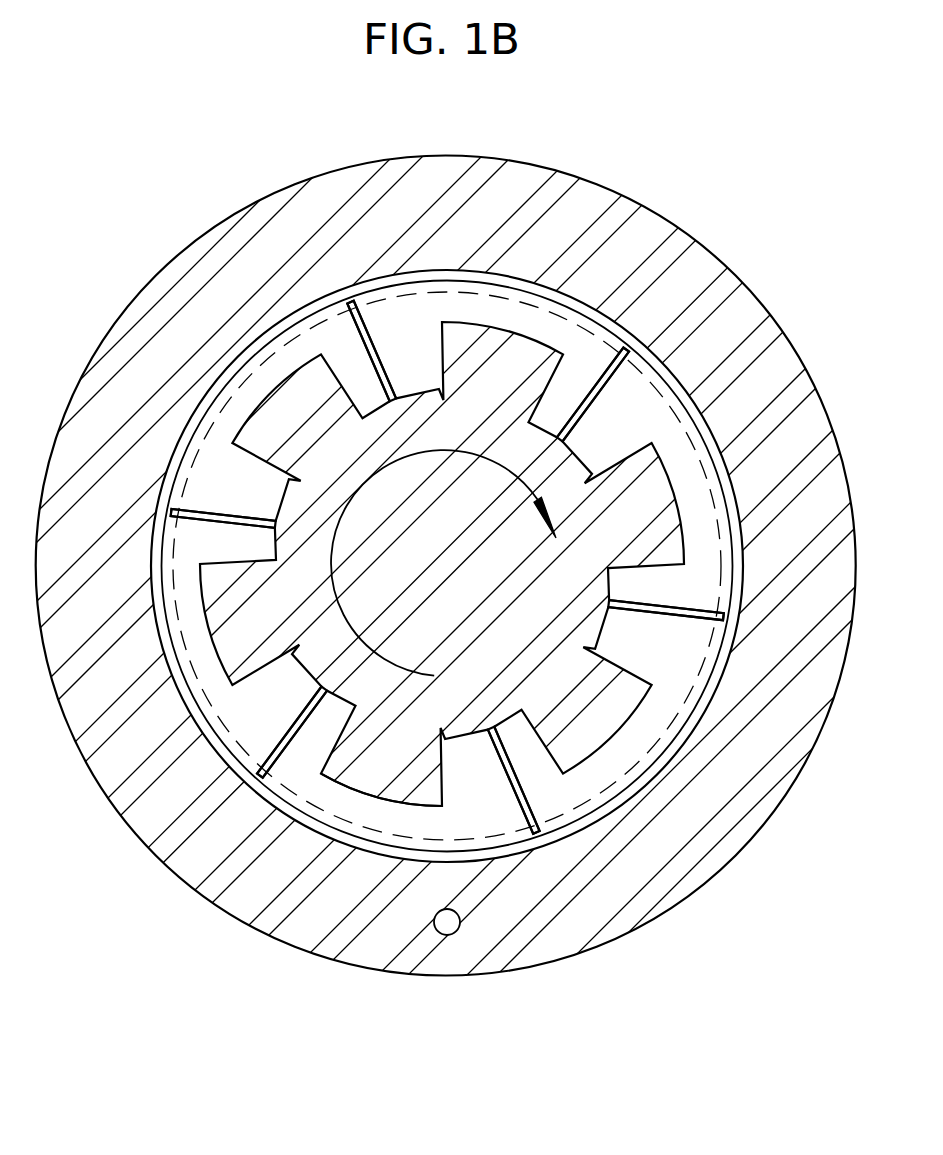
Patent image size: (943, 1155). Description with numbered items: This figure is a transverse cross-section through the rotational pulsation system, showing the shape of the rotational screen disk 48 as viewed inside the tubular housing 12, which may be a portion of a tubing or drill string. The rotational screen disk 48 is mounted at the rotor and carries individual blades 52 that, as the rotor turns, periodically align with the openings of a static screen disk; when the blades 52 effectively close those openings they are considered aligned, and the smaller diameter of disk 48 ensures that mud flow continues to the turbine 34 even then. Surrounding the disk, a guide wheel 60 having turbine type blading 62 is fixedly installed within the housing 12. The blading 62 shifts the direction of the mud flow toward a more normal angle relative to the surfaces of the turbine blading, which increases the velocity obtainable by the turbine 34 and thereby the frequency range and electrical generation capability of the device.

The housing 12 is at (587, 200).
The turbine 34 is at (624, 752).
The rotational screen disk 48 is at (515, 617).
The blades 52 is at (355, 778).
The guide wheel 60 is at (720, 462).
The turbine type blading 62 is at (617, 386).